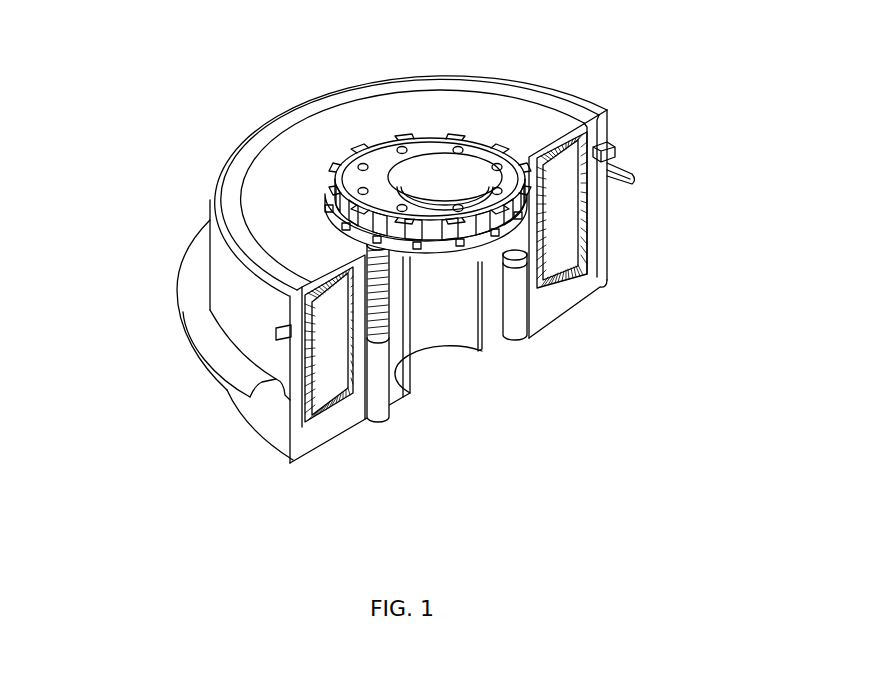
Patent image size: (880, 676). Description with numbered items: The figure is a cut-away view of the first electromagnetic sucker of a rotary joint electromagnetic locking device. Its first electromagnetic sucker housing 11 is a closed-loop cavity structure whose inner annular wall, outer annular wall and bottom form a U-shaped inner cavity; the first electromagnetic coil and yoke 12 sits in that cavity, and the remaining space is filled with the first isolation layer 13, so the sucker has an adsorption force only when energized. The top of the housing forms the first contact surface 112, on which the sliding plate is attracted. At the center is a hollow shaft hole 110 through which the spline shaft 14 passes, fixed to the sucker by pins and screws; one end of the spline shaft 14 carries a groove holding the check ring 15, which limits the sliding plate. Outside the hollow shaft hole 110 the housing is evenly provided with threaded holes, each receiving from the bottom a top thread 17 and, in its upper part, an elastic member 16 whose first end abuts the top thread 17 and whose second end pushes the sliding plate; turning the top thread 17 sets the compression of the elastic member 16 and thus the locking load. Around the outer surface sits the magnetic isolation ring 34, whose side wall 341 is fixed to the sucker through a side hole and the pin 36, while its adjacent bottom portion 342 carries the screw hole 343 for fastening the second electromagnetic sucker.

The first electromagnetic sucker housing 11 is at (599, 132).
The first electromagnetic coil and yoke 12 is at (563, 210).
The first isolation layer 13 is at (590, 233).
The spline shaft 14 is at (367, 150).
The check ring 15 is at (353, 197).
The elastic member 16 is at (423, 380).
The top thread 17 is at (517, 298).
The hollow shaft hole 110 is at (518, 335).
The first contact surface 112 is at (240, 237).
The magnetic isolation ring 34 is at (215, 297).
The side wall 341 is at (207, 250).
The bottom portion 342 is at (177, 290).
The screw hole 343 is at (245, 390).
The pin 36 is at (272, 334).